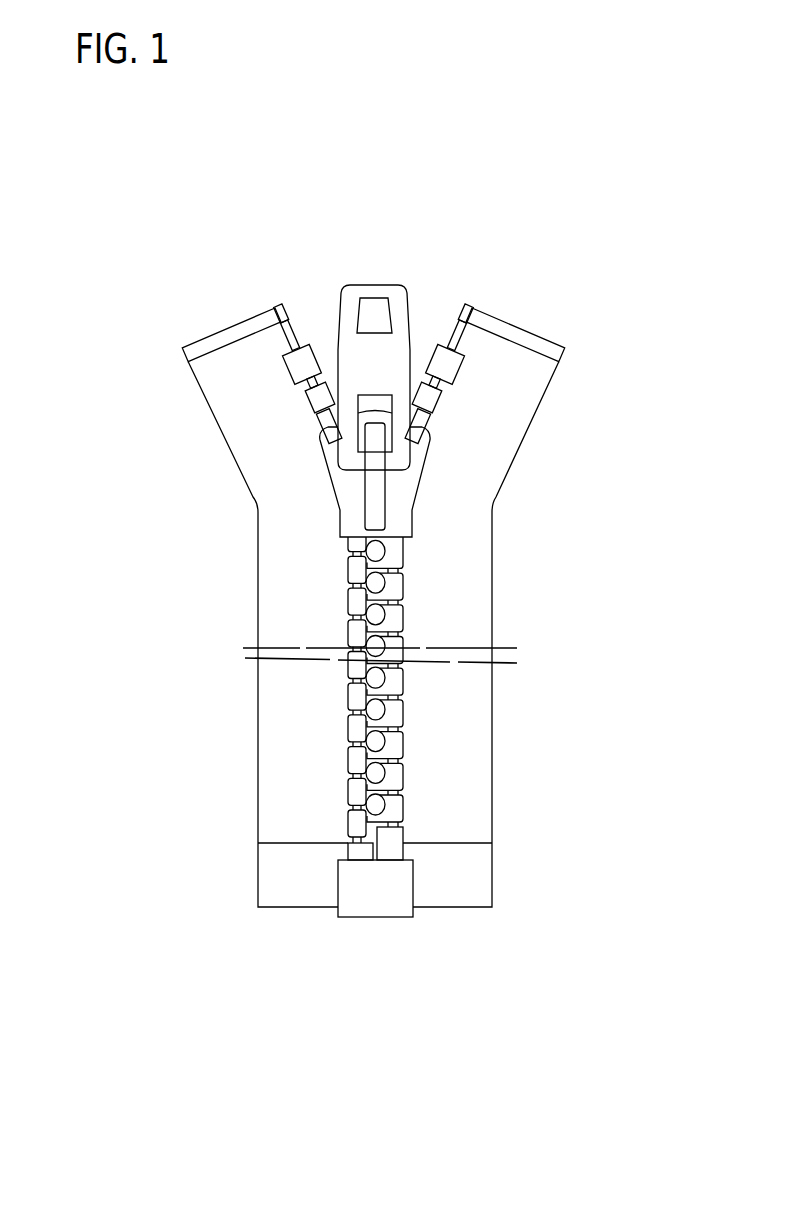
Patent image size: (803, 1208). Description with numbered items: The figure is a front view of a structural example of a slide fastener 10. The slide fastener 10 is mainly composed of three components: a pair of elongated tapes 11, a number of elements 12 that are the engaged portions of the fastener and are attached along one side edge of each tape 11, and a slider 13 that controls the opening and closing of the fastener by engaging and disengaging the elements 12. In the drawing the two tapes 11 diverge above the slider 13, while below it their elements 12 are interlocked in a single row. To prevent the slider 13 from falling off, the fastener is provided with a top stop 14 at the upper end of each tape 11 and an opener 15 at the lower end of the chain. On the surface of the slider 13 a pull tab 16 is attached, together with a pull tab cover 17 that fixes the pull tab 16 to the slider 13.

The slide fastener 10 is at (133, 318).
The tapes 11 is at (223, 388).
The elements 12 is at (357, 603).
The slider 13 is at (343, 483).
The top stop 14 is at (308, 342).
The opener 15 is at (393, 920).
The pull tab 16 is at (373, 285).
The pull tab cover 17 is at (380, 517).